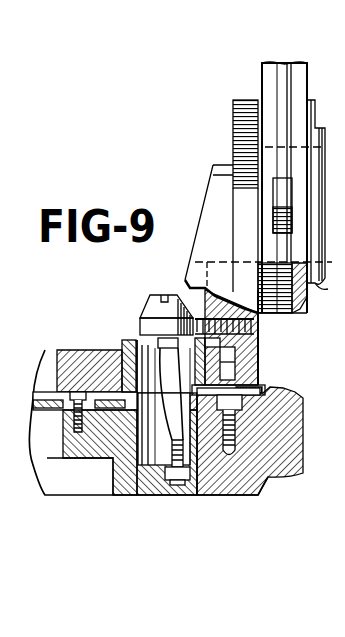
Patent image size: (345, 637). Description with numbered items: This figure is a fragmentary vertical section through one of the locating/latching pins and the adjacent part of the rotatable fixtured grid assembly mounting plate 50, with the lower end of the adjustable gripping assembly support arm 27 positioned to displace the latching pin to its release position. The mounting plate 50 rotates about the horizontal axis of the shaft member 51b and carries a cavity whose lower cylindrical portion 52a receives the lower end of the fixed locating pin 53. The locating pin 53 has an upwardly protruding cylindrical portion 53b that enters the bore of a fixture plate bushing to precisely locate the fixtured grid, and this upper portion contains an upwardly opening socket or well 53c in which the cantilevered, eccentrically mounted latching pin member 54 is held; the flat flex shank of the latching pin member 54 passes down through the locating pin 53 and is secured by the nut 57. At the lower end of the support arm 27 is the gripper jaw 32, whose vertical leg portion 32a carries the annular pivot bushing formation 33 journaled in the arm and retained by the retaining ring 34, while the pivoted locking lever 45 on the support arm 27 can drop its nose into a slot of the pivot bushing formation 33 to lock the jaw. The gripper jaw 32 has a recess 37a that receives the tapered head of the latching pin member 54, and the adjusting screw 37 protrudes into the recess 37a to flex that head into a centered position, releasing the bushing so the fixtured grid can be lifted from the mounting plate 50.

The support arm 27 is at (310, 62).
The locking lever 45 is at (283, 63).
The retaining ring 34 is at (316, 118).
The pivot bushing formation 33 is at (328, 272).
The vertical leg portion 32a is at (240, 118).
The recess 37a is at (191, 282).
The latching pin member 54 is at (148, 294).
The adjusting screw 37 is at (265, 328).
The gripper jaw 32 is at (262, 363).
The fixtured grid assembly mounting plate 50 is at (258, 490).
The shaft member 51b is at (306, 426).
The lower cylindrical portion of cavity 52a is at (186, 500).
The upwardly protruding cylindrical portion 53b is at (123, 367).
The upwardly opening socket or well 53c is at (130, 343).
The locating pin 53 is at (146, 496).
The nut 57 is at (176, 497).